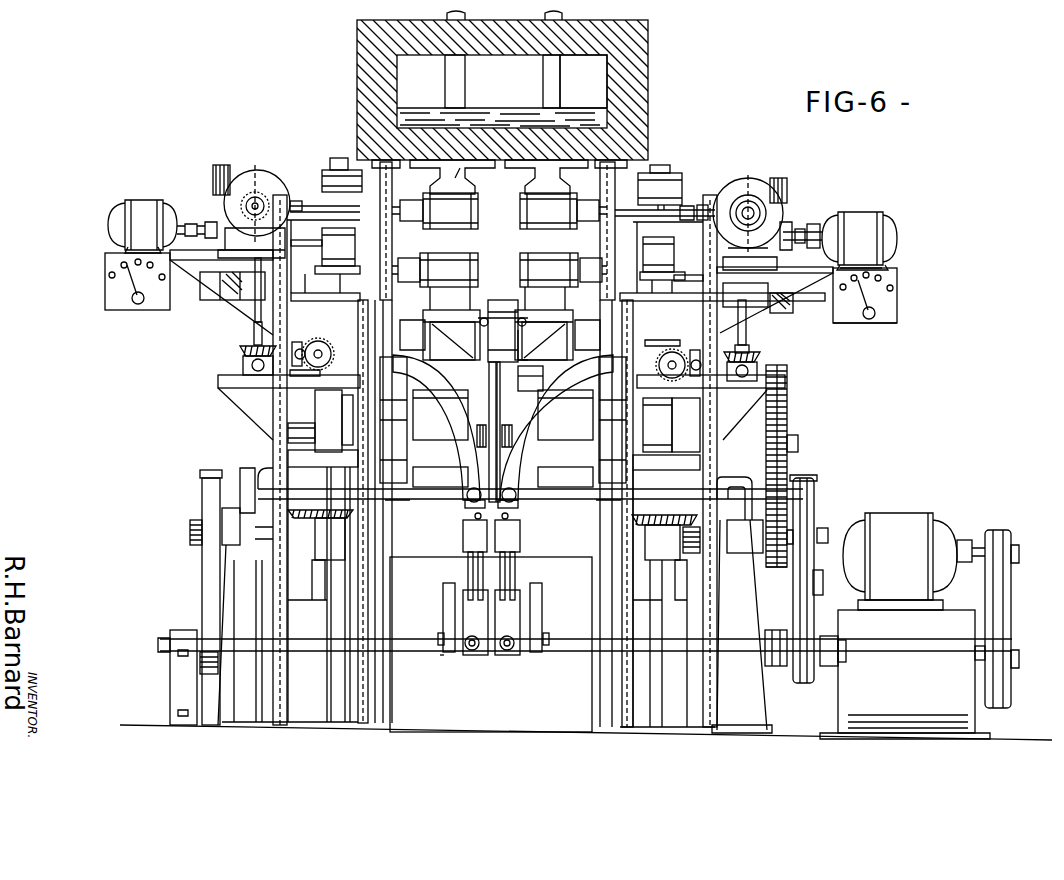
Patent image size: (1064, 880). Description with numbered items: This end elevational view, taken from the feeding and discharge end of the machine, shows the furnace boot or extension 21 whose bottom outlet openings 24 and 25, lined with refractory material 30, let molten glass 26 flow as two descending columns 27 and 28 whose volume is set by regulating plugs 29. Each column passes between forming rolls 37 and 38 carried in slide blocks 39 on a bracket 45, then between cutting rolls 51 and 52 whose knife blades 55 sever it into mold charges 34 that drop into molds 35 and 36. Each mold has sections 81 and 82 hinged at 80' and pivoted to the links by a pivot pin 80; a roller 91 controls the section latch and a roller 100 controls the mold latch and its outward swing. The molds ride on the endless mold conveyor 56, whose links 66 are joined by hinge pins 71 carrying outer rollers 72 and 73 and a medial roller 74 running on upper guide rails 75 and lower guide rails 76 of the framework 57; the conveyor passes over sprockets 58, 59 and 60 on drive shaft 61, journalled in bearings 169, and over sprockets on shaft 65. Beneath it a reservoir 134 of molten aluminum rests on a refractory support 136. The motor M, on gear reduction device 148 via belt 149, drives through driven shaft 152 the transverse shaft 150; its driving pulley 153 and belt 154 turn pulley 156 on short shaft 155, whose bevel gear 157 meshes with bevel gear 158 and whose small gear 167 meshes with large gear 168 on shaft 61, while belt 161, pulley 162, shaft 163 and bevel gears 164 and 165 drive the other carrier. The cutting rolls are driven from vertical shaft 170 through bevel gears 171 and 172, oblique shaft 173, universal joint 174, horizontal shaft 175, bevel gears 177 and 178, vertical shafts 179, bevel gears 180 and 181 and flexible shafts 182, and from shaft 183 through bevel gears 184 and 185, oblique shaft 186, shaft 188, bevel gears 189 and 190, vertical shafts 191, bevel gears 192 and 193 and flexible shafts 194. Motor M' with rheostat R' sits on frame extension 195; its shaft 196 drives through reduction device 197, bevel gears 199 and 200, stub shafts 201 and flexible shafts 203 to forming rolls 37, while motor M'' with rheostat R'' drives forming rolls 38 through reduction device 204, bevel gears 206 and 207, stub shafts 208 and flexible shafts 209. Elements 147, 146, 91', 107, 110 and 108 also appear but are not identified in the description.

The boot or extension 21 is at (648, 64).
The regulating plugs 29 is at (445, 76).
The molten glass 26 is at (586, 126).
The refractory material 30 is at (450, 166).
The bottom outlet opening 25 is at (437, 184).
The descending column or stream 28 is at (468, 184).
The descending column or stream 27 is at (537, 184).
The bottom outlet opening 24 is at (552, 184).
The supporting slide blocks 39 is at (500, 211).
The forming roll 38 is at (478, 208).
The forming roll 37 is at (520, 221).
The bracket 45 is at (580, 229).
The cutting roll 52 is at (482, 246).
The cutting roll 51 is at (494, 260).
The knife blades 55 is at (520, 268).
The mold 36 is at (458, 310).
The mold 35 is at (558, 312).
The mold charges 34 is at (515, 297).
The pivot pin 80 is at (495, 425).
The outer roller 73 is at (393, 336).
The medially disposed roller 74 is at (497, 325).
The upper guide rails 75 is at (400, 350).
The outer roller 72 is at (584, 348).
The hinge pin 71 is at (520, 386).
The sprocket 59 is at (530, 416).
The curved arms 147 is at (452, 426).
The sprocket 58 is at (402, 384).
The links 66 is at (561, 465).
The sprocket 60 is at (580, 455).
The lower guide rails 76 is at (392, 505).
The endless mold conveyor 56 is at (540, 506).
The mold section 82 is at (470, 546).
The reservoir 134 is at (575, 557).
The hinge 80' is at (471, 576).
The mold section 81 is at (515, 590).
The bars 146 is at (443, 617).
The roller 91 is at (508, 634).
The knob 91' is at (428, 668).
The roller 100 is at (505, 654).
The refractory support 136 is at (528, 732).
The framework 57 is at (273, 455).
The bearings 169 is at (300, 425).
The shaft 65 is at (655, 420).
The bevel gear 165 is at (315, 504).
The bevel gear 158 is at (684, 508).
The bevel gear 157 is at (702, 540).
The bevel gear 193 is at (268, 241).
The vertical shafts 191 is at (252, 331).
The bevel gear 190 is at (243, 349).
The bevel gear 189 is at (243, 363).
The shaft 188 is at (255, 370).
The bevel gear 184 is at (326, 343).
The bevel gear 185 is at (335, 360).
The oblique shaft 186 is at (305, 372).
The bevel gear 192 is at (258, 298).
The cylinder 107 is at (337, 240).
The flexible shafts 194 is at (330, 264).
The flexible shafts 182 is at (686, 270).
The worm and gear reduction device 204 is at (222, 200).
The bevel gear 206 is at (272, 172).
The bevel gear 207 is at (295, 195).
The stub shafts 208 is at (302, 198).
The flexible shafts 209 is at (341, 182).
The shaft 183 is at (338, 158).
The variable speed electric motor M'' is at (162, 226).
The rheostat R'' is at (137, 292).
The pulley 162 is at (200, 480).
The belt 161 is at (202, 498).
The shaft 163 is at (190, 526).
The bevel gear 164 is at (288, 528).
The transverse shaft 150 is at (160, 643).
The bevel gear 171 is at (658, 335).
The bevel gear 172 is at (668, 355).
The oblique shaft 173 is at (680, 361).
The vertical shafts 179 is at (745, 322).
The universal joint 174 is at (742, 350).
The bevel gears 178 is at (764, 352).
The bevel gears 177 is at (762, 368).
The horizontal shaft 175 is at (744, 415).
The gear 168 is at (788, 422).
The transverse drive shaft 61 is at (803, 442).
The gear 167 is at (773, 567).
The driven pulley 156 is at (809, 480).
The short transverse shaft 155 is at (827, 530).
The belt 154 is at (829, 592).
The driving pulley 153 is at (838, 646).
The driven shaft 152 is at (770, 668).
The knob 110 is at (655, 166).
The vertically extending shaft 170 is at (680, 170).
The rod 108 is at (678, 168).
The flexible shafts 203 is at (694, 205).
The stub shafts 201 is at (714, 205).
The bevel gears 200 is at (760, 180).
The bevel gears 181 is at (752, 242).
The bevel gears 180 is at (786, 296).
The worm and gear reduction device 197 is at (784, 196).
The bevel gears 199 is at (808, 230).
The shaft 196 is at (870, 215).
The variable speed electric motor M' is at (884, 228).
The extension 195 is at (897, 272).
The rheostat R' is at (886, 304).
The electric motor M is at (914, 561).
The gear reduction device 148 is at (915, 689).
The belt 149 is at (1012, 548).